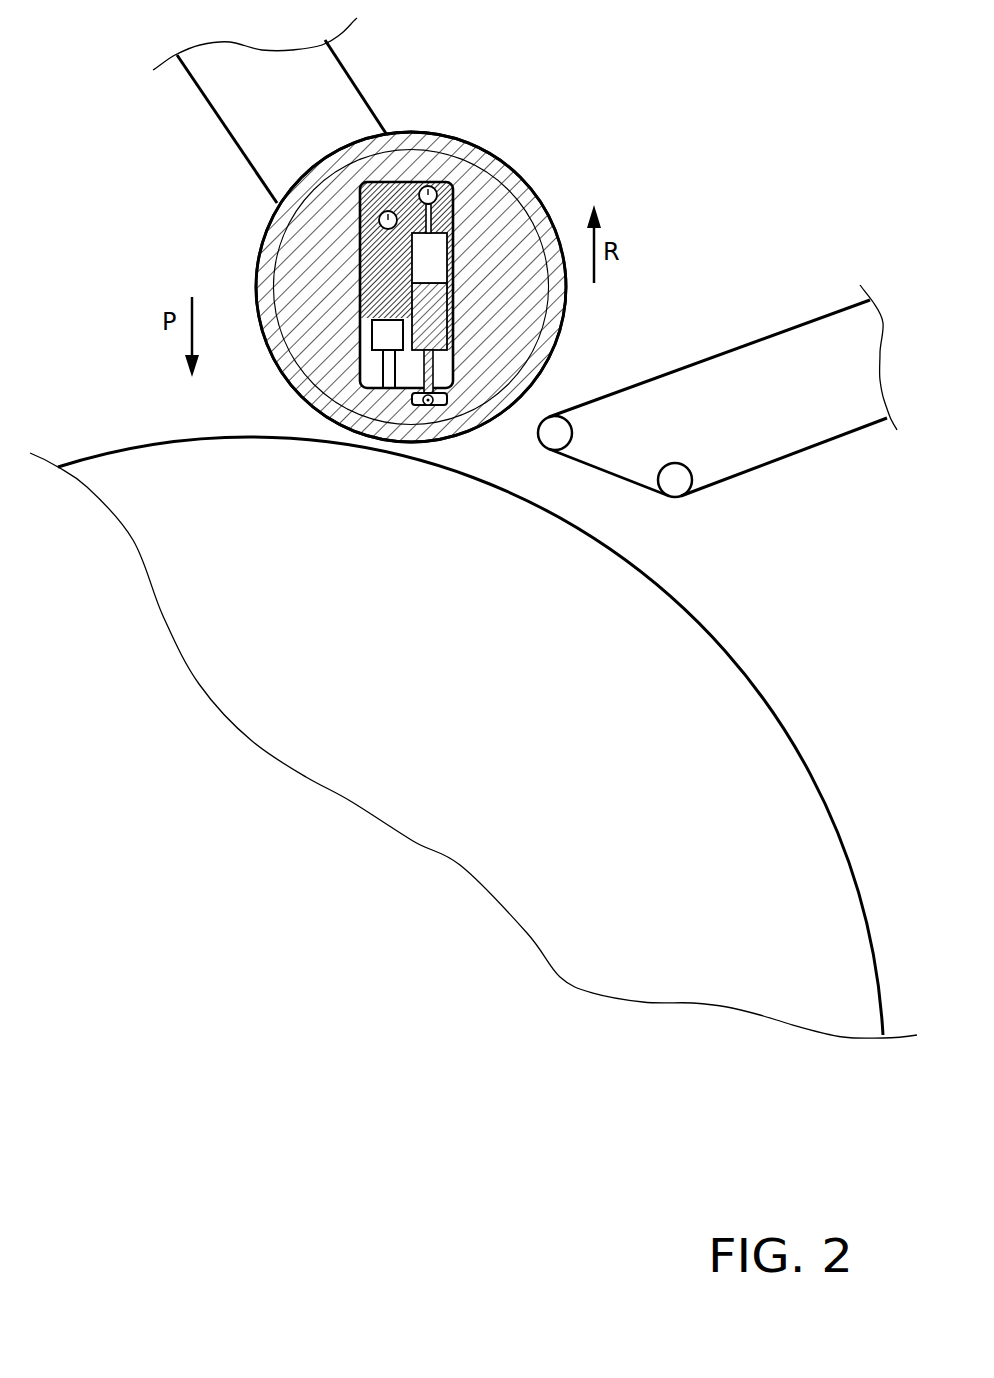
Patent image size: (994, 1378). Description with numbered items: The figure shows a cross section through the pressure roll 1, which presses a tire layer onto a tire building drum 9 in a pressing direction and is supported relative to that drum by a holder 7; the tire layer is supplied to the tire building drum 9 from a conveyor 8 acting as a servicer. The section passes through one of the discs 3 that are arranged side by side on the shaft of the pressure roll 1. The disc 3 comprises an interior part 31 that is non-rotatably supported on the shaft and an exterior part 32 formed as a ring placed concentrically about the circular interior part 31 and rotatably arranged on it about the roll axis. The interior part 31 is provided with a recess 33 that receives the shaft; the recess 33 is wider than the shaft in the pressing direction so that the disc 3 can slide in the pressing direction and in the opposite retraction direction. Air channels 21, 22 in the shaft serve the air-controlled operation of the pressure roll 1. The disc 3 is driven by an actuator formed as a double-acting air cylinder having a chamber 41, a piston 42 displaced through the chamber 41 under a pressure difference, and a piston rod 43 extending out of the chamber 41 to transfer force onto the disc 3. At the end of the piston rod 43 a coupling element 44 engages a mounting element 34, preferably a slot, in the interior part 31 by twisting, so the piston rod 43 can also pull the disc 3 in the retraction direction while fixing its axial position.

The pressure roll 1 is at (564, 104).
The disc 3 is at (478, 152).
The holder 7 is at (222, 100).
The conveyor 8 is at (747, 438).
The tire building drum 9 is at (356, 788).
The air channel 21 is at (428, 186).
The air channel 22 is at (385, 211).
The interior part 31 is at (340, 358).
The exterior part 32 is at (345, 413).
The recess 33 is at (455, 345).
The mounting element 34 is at (420, 407).
The chamber 41 is at (438, 247).
The piston 42 is at (447, 327).
The piston rod 43 is at (432, 366).
The coupling element 44 is at (430, 406).